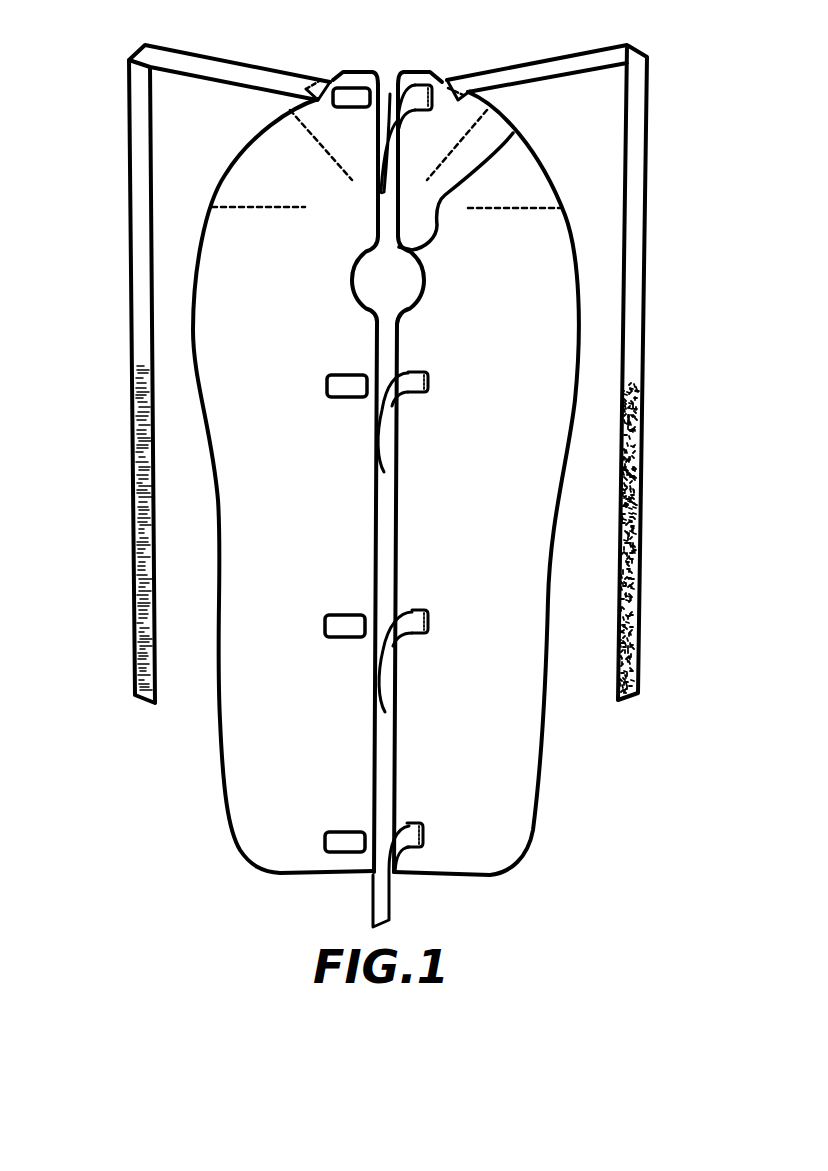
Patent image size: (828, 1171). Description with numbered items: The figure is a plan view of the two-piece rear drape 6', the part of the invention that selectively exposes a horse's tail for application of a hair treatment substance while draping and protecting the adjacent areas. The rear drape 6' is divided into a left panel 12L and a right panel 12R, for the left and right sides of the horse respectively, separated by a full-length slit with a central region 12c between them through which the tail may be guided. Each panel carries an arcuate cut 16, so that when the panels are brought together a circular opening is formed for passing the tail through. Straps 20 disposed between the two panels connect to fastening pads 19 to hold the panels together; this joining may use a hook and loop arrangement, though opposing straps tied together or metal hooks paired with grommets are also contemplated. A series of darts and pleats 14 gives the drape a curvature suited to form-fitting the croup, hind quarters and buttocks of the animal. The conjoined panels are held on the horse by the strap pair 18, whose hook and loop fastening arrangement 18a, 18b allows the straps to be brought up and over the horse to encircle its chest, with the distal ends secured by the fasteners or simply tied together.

The rear drape 6' is at (152, 777).
The central spine 12c is at (392, 72).
The left panel 12L is at (283, 486).
The right panel 12R is at (486, 483).
The darts and pleats 14 is at (235, 207).
The arcuate cut 16 is at (513, 133).
The strap pair 18 is at (137, 290).
The hook and loop fastening arrangement 18a is at (140, 640).
The hook and loop fastening arrangement 18b is at (641, 612).
The fastening pads 19 is at (335, 842).
The straps 20 is at (378, 910).